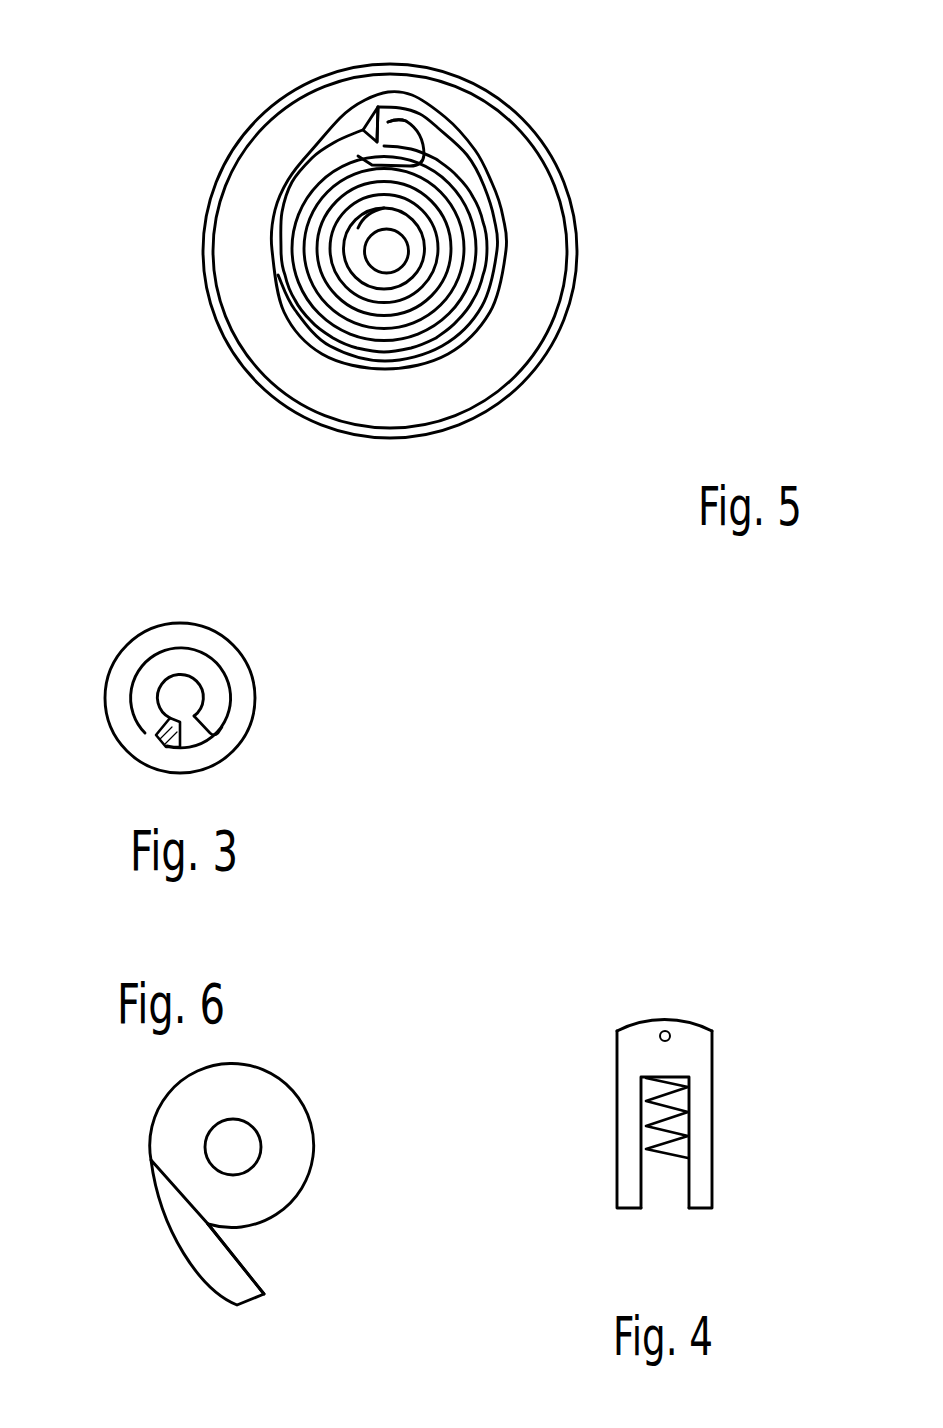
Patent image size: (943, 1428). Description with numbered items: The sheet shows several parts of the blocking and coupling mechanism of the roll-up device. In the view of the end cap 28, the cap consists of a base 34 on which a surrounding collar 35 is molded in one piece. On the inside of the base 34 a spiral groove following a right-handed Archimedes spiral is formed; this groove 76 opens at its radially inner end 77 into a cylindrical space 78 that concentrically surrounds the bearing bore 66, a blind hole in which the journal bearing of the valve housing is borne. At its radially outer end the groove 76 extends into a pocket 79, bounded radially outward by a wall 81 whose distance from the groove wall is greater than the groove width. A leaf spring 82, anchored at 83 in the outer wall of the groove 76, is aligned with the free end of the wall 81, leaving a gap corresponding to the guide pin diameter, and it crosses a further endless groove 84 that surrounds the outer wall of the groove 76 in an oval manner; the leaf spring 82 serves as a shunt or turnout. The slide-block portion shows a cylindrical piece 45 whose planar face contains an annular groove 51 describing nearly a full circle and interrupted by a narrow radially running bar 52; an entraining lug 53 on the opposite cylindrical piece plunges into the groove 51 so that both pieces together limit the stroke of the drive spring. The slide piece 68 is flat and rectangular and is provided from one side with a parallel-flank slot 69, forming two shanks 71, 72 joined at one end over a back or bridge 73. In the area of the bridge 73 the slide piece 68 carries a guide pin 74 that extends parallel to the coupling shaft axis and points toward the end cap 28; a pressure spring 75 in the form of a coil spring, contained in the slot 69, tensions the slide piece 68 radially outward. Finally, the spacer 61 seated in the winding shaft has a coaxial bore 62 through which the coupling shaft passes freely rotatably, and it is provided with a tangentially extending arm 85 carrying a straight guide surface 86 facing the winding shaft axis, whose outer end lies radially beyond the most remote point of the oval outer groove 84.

In FIG. 5, the cap 28 is at (574, 90).
In FIG. 5, the base 34 is at (523, 187).
In FIG. 5, the surrounding collar 35 is at (515, 383).
In FIG. 5, the bearing bore 66 is at (393, 252).
In FIG. 5, the groove 76 is at (375, 302).
In FIG. 5, the radially inner end 77 is at (357, 230).
In FIG. 5, the cylindrical space 78 is at (413, 232).
In FIG. 5, the pocket 79 is at (410, 150).
In FIG. 5, the wall 81 is at (390, 121).
In FIG. 5, the leaf spring 82 is at (378, 107).
In FIG. 5, the anchoring point 83 is at (367, 128).
In FIG. 5, the endless groove 84 is at (478, 297).
In FIG. 3, the cylindrical piece 45 is at (122, 628).
In FIG. 3, the annular groove 51 is at (210, 677).
In FIG. 3, the bar 52 is at (215, 733).
In FIG. 3, the entraining lug 53 is at (160, 741).
In FIG. 6, the spacer 61 is at (293, 1155).
In FIG. 6, the coaxial bore 62 is at (235, 1132).
In FIG. 6, the arm 85 is at (207, 1257).
In FIG. 6, the guide surface 86 is at (257, 1280).
In FIG. 4, the slide piece 68 is at (665, 993).
In FIG. 4, the slot 69 is at (659, 1200).
In FIG. 4, the shank 71 is at (625, 1133).
In FIG. 4, the shank 72 is at (701, 1142).
In FIG. 4, the bridge 73 is at (672, 1060).
In FIG. 4, the guide pin 74 is at (670, 1030).
In FIG. 4, the pressure spring 75 is at (680, 1104).